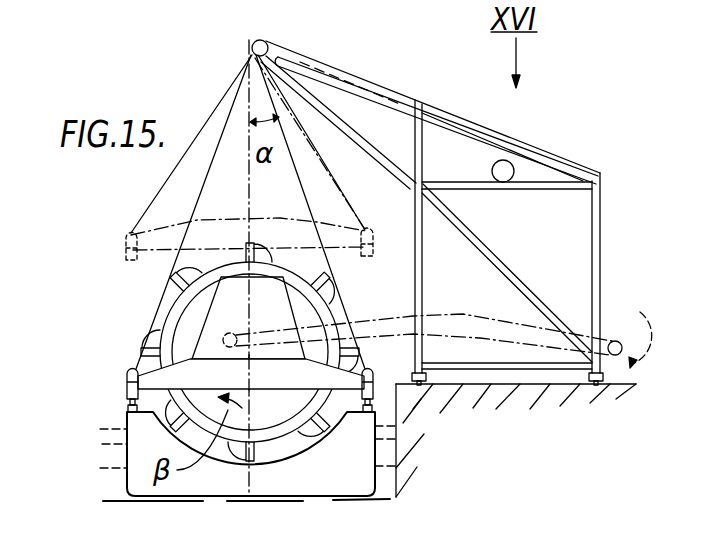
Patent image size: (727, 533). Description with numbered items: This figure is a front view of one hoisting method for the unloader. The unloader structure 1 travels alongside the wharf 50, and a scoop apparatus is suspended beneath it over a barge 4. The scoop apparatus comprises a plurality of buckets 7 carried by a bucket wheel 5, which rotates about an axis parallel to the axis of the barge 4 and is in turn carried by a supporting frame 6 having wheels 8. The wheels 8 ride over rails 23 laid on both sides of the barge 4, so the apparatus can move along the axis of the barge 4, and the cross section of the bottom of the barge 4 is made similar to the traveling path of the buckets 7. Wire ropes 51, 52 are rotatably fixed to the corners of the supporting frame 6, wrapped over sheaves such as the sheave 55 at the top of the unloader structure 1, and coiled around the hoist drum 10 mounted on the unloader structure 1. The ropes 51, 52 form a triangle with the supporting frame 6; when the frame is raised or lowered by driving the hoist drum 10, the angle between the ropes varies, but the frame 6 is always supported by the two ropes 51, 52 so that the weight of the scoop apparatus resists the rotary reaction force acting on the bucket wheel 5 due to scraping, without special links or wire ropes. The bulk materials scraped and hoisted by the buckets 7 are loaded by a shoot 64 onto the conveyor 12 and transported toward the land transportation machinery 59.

The unloader structure 1 is at (434, 111).
The barge 4 is at (135, 475).
The bucket wheel 5 is at (287, 434).
The supporting frame 6 is at (160, 379).
The bucket 7 is at (153, 338).
The wheel 8 is at (130, 403).
The hoist drum 10 is at (510, 163).
The conveyor 12 is at (445, 318).
The rail 23 is at (128, 409).
The wharf 50 is at (473, 416).
The wire rope 51 is at (338, 284).
The wire rope 52 is at (224, 114).
The sheave 55 is at (268, 44).
The land transportation machinery 59 is at (629, 331).
The shoot 64 is at (220, 300).